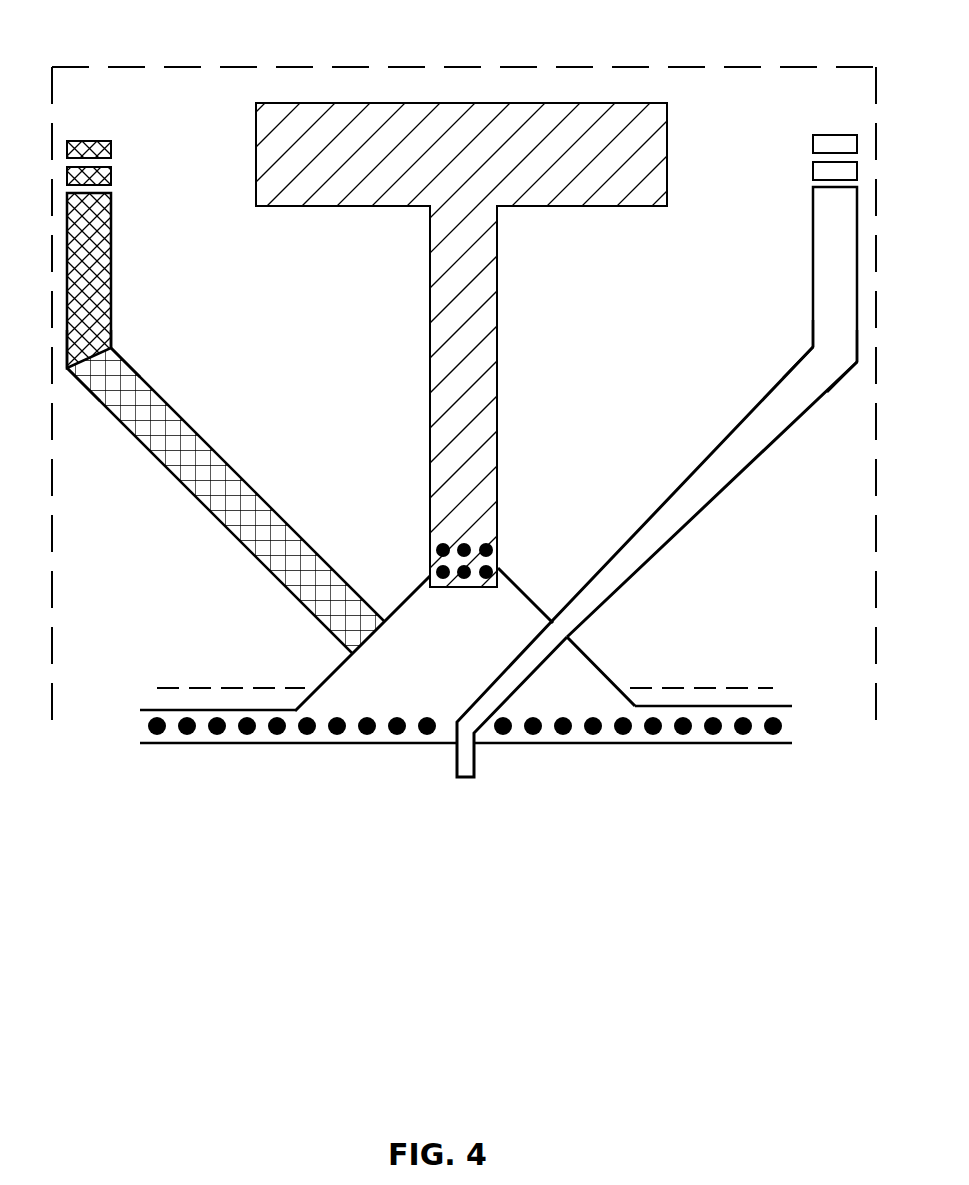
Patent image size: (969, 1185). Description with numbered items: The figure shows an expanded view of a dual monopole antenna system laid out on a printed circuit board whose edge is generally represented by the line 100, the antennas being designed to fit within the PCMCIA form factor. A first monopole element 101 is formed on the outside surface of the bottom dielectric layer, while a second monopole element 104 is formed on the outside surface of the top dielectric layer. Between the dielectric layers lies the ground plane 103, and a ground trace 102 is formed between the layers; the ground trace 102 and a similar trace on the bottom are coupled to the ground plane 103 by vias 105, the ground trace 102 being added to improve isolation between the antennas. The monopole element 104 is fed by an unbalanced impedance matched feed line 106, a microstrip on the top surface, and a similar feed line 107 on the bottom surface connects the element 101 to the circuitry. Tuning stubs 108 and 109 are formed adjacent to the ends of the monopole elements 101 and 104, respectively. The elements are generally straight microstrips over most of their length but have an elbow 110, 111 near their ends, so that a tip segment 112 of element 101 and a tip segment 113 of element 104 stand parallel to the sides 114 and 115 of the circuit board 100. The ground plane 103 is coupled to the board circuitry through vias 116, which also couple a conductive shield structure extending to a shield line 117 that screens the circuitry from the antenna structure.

The line representing printed circuit board edge 100 is at (597, 67).
The first monopole element 101 is at (212, 443).
The ground trace 102 is at (497, 275).
The ground plane 103 is at (612, 680).
The second monopole element 104 is at (726, 433).
The vias 105 is at (497, 545).
The unbalanced impedance matched feed line 106 is at (466, 778).
The feed line 107 is at (416, 578).
The tuning stub 108 is at (82, 141).
The tuning stub 109 is at (835, 135).
The elbow 110 is at (114, 347).
The elbow 111 is at (811, 345).
The tip segment 112 is at (112, 228).
The tip segment 113 is at (813, 222).
The side of printed circuit board 114 is at (53, 495).
The side of printed circuit board 115 is at (876, 480).
The vias 116 is at (653, 734).
The shield line 117 is at (745, 688).